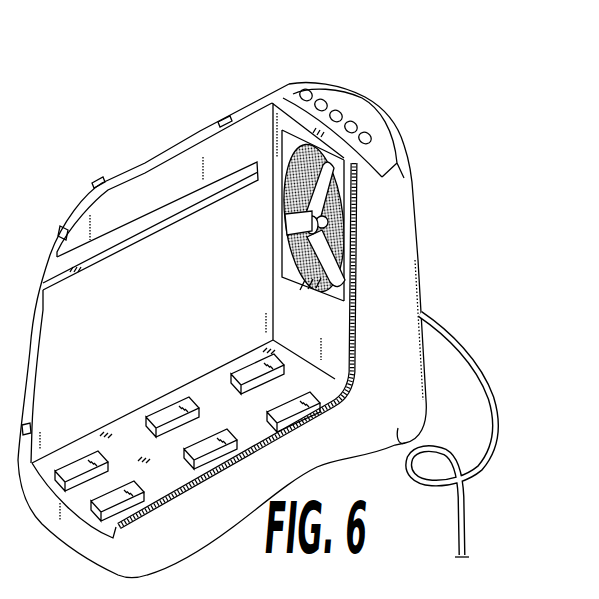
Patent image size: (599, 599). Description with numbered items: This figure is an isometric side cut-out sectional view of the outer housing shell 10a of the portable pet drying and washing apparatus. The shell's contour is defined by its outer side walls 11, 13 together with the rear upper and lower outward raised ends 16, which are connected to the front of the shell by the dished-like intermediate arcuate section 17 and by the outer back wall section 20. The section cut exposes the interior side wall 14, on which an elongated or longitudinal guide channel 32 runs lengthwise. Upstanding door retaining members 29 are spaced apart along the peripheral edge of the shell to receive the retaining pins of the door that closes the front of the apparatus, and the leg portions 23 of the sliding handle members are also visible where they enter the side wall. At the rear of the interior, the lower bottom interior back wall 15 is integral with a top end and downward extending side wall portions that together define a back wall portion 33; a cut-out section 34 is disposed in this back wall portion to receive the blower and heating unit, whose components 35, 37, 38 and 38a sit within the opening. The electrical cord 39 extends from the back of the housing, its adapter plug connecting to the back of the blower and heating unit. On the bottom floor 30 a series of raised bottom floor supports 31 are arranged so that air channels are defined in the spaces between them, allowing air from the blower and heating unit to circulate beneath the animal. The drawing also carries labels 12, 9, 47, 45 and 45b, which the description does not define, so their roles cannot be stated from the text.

The outer housing shell 10a is at (284, 81).
The outer side wall 11 is at (214, 540).
The housing portion 12 is at (7, 377).
The outer side wall 13 is at (148, 598).
The interior side wall 14 is at (175, 330).
The lower bottom interior back wall 15 is at (320, 333).
The rear outward raised end 16 is at (402, 260).
The intermediate arcuate section 17 is at (287, 466).
The outer back wall section 20 is at (420, 288).
The leg portions 23 is at (98, 181).
The door retaining member 29 is at (62, 228).
The bottom floor 30 is at (130, 438).
The raised bottom floor supports 31 is at (190, 445).
The elongated guide channel 32 is at (93, 262).
The back wall portion 33 is at (287, 130).
The cut-out section 34 is at (340, 298).
The blower and heating unit 35 is at (407, 175).
The blower and heating unit 37 is at (352, 114).
The blower and heating unit 38 is at (296, 228).
The blower and heating unit 38a is at (299, 265).
The electrical cord 39 is at (489, 376).
The latch 9 is at (25, 437).
The component 47 is at (328, 591).
The component 45 is at (357, 592).
The component 45b is at (384, 591).